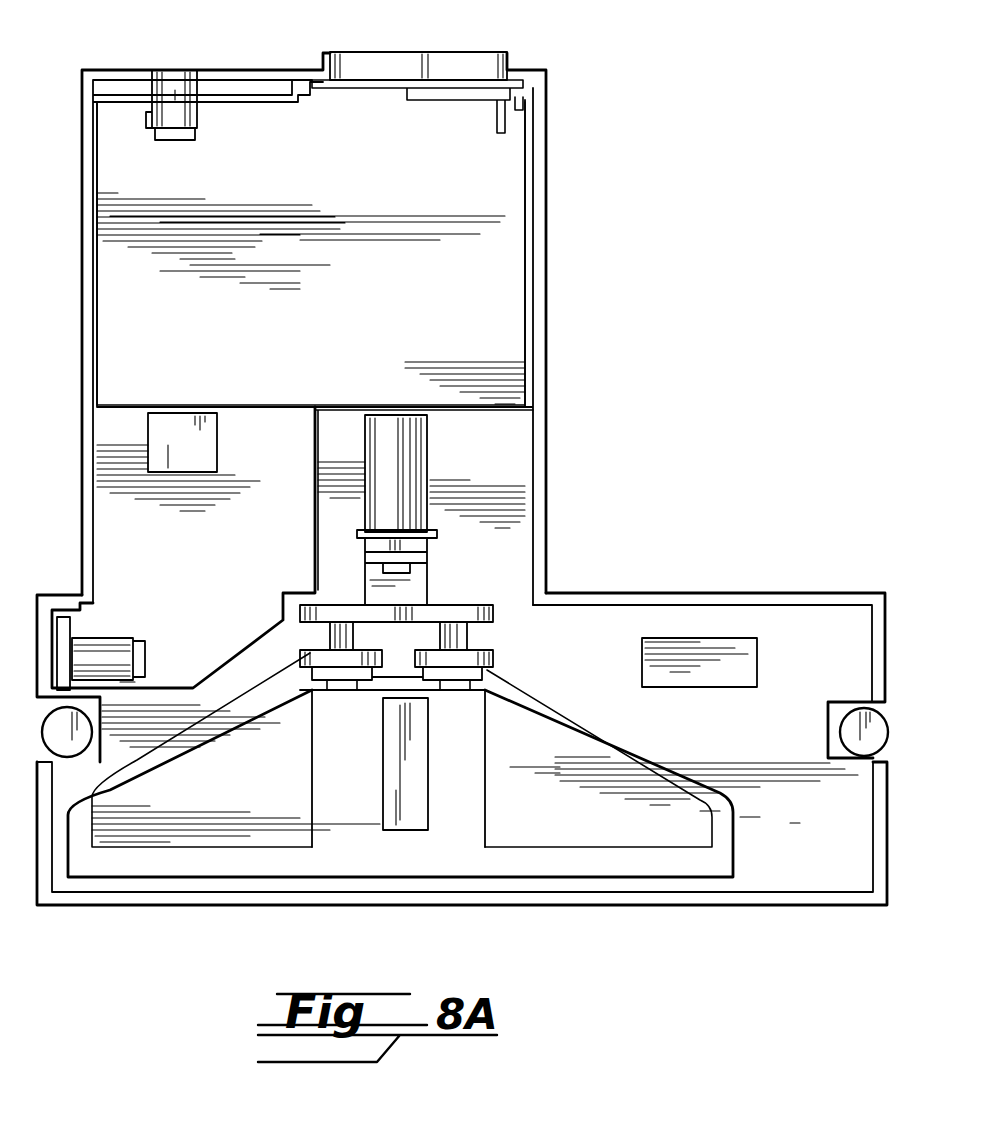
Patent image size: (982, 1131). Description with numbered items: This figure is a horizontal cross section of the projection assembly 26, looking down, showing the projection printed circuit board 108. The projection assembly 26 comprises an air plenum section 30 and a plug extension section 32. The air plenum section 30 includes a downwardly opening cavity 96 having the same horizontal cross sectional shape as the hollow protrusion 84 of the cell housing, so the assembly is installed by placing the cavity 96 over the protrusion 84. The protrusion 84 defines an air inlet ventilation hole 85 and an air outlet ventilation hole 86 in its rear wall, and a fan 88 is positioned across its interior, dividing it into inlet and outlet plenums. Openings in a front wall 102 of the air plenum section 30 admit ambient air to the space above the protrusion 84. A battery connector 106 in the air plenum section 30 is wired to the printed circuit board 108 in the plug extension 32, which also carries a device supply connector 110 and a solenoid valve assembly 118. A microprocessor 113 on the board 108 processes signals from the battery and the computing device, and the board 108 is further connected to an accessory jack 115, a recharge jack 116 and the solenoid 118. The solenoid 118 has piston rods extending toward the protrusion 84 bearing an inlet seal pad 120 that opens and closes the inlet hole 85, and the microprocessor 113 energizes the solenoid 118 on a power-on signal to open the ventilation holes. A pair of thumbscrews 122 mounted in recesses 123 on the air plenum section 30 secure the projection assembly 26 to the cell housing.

The projection assembly 26 is at (748, 242).
The air plenum section 30 is at (602, 593).
The plug extension section 32 is at (546, 138).
The hollow protrusion 84 is at (572, 738).
The air inlet ventilation hole 85 is at (452, 688).
The air outlet ventilation hole 86 is at (343, 683).
The fan 88 is at (395, 760).
The downwardly opening cavity 96 is at (557, 713).
The front wall 102 is at (515, 905).
The battery connector 106 is at (702, 673).
The projection printed circuit board 108 is at (503, 313).
The device supply connector 110 is at (458, 60).
The microprocessor 113 is at (178, 433).
The accessory jack 115 is at (118, 640).
The recharge jack 116 is at (170, 122).
The solenoid valve assembly 118 is at (395, 470).
The inlet seal pad 120 is at (307, 652).
The thumbscrews 122 is at (75, 743).
The recesses 123 is at (97, 713).